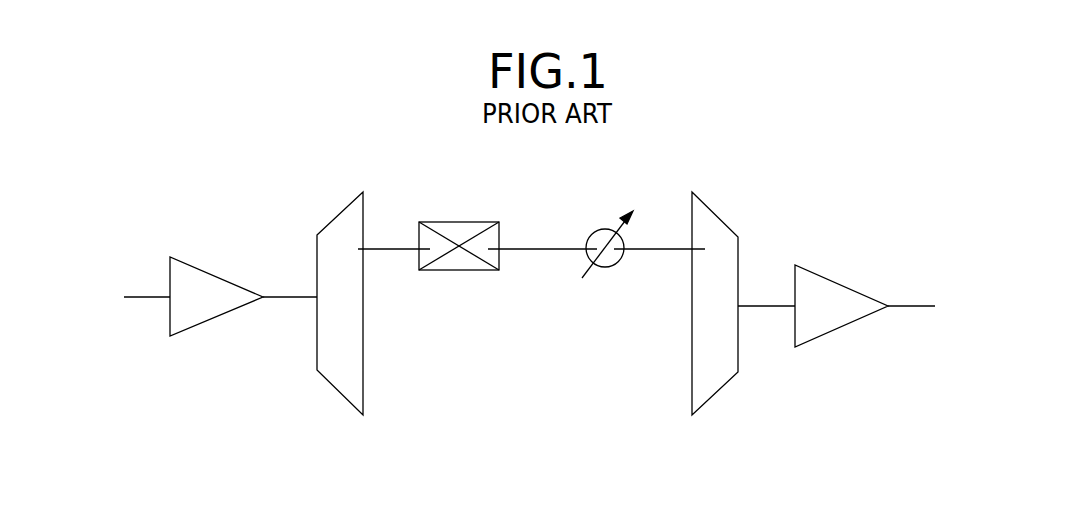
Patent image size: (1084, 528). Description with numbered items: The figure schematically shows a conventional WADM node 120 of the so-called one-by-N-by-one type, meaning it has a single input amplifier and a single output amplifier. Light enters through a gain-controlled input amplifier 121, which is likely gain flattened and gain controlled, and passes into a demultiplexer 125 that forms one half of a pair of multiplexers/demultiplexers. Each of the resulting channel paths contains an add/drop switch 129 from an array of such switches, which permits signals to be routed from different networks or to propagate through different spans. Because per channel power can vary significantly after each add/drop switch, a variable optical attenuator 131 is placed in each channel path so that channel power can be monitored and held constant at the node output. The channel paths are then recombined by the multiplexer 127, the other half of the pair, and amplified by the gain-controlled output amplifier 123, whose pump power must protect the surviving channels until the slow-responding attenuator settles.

The WADM node 120 is at (673, 182).
The input amplifier 121 is at (195, 330).
The output amplifier 123 is at (825, 335).
The 1×N demultiplexer 125 is at (330, 387).
The N×1 multiplexer 127 is at (708, 400).
The add/drop switch 129 is at (463, 220).
The variable optical attenuator 131 is at (607, 267).